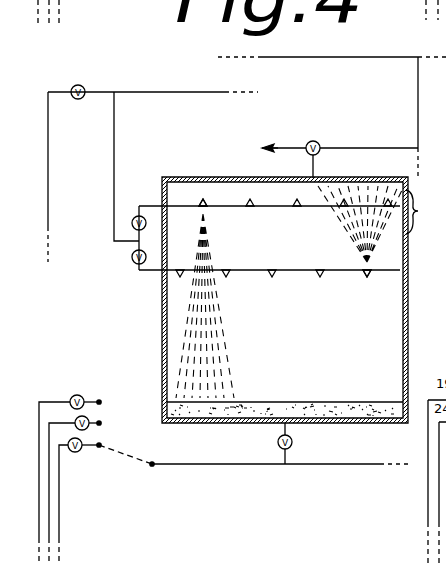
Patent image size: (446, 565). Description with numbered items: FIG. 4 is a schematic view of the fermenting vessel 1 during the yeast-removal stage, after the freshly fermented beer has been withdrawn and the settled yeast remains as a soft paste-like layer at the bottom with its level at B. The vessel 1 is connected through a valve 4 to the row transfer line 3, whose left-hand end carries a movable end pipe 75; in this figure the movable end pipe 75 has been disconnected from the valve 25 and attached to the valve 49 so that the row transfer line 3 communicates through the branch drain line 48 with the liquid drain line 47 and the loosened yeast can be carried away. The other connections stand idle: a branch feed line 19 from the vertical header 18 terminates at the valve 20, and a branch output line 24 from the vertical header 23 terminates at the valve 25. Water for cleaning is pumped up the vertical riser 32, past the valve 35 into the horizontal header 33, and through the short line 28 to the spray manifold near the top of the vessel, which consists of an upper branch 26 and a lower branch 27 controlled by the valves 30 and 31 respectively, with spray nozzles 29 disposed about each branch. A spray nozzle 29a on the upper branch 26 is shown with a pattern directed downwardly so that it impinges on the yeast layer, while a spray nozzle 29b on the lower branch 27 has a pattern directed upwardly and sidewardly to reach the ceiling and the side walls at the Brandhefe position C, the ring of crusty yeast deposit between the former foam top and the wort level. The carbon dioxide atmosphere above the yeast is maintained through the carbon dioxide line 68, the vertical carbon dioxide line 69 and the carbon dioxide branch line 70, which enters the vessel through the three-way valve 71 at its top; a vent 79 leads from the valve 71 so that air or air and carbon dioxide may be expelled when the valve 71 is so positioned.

The fermenting vessel 1 is at (162, 364).
The row transfer line 3 is at (323, 463).
The valve 4 is at (292, 442).
The vertical header 18 is at (39, 524).
The branch feed line 19 is at (58, 402).
The valve 20 is at (77, 395).
The vertical header 23 is at (49, 513).
The branch output line 24 is at (67, 422).
The valve 25 is at (90, 420).
The upper branch 26 is at (150, 203).
The lower branch 27 is at (148, 275).
The short line 28 is at (114, 143).
The spray nozzles 29 is at (319, 264).
The spray nozzle 29a is at (208, 211).
The spray nozzle 29b is at (372, 277).
The valve 30 is at (138, 217).
The valve 31 is at (136, 262).
The vertical riser 32 is at (48, 157).
The horizontal header 33 is at (165, 93).
The valve 35 is at (85, 88).
The liquid drain line 47 is at (60, 500).
The branch drain line 48 is at (62, 446).
The valve 49 is at (85, 450).
The carbon dioxide line 68 is at (383, 58).
The vertical carbon dioxide line 69 is at (418, 104).
The carbon dioxide branch line 70 is at (382, 148).
The valve 71 is at (316, 140).
The movable end pipe 75 is at (120, 450).
The vent 79 is at (293, 146).
The yeast layer level B is at (388, 400).
The Brandhefe position C is at (419, 212).